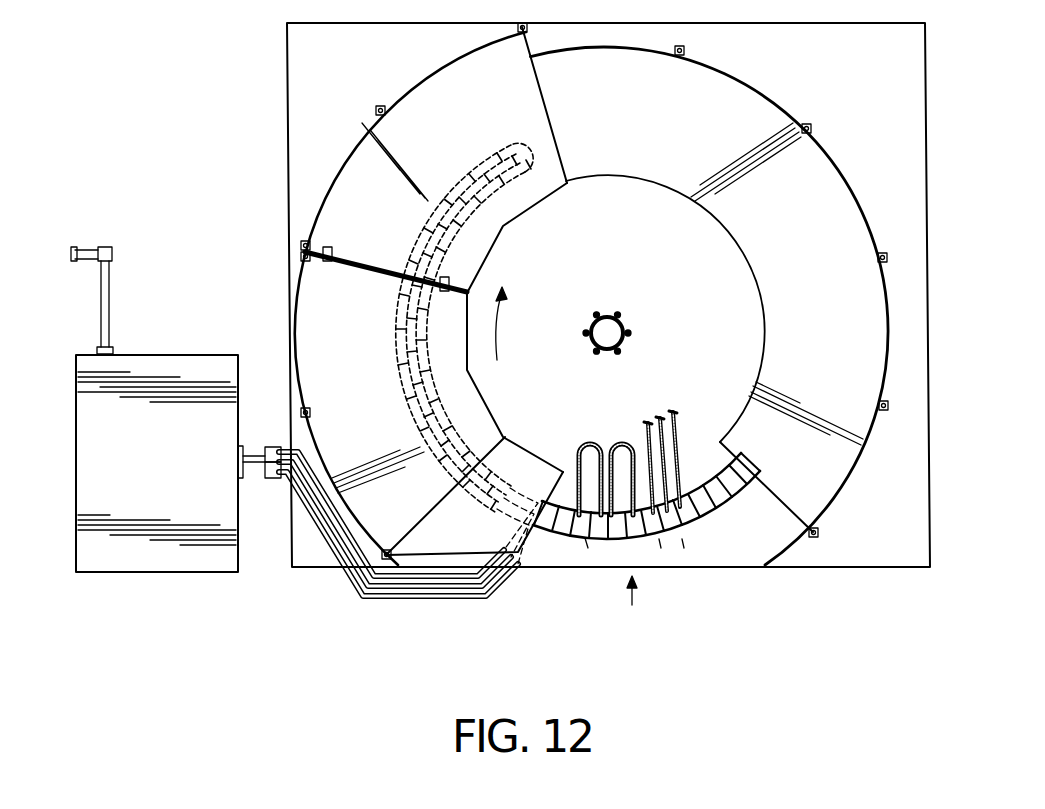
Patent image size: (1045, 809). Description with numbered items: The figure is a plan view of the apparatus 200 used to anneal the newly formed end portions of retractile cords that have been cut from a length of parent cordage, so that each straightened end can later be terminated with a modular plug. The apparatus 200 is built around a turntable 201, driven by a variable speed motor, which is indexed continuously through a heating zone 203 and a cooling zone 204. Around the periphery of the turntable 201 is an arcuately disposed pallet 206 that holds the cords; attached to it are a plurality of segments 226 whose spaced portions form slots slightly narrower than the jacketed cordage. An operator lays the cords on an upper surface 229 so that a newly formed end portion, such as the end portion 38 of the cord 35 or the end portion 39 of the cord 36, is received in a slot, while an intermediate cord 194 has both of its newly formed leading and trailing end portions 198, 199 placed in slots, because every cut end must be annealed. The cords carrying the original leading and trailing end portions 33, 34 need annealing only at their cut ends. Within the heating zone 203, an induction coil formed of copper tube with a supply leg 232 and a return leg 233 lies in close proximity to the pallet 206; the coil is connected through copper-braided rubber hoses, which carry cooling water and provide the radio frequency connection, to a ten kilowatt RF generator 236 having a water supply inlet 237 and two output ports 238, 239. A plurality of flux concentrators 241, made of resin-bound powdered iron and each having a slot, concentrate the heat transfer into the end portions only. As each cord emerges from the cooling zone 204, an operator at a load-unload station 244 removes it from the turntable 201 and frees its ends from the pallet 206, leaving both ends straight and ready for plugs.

The apparatus 200 is at (320, 642).
The turntable 201 is at (732, 388).
The heating zone 203 is at (463, 396).
The cooling zone 204 is at (762, 256).
The pallet 206 is at (546, 532).
The segments 226 is at (722, 498).
The upper surface 229 is at (703, 474).
The supply leg 232 is at (403, 367).
The return leg 233 is at (477, 209).
The RF generator 236 is at (170, 372).
The water supply inlet 237 is at (116, 350).
The output port 238 is at (243, 458).
The output port 239 is at (240, 458).
The flux concentrators 241 is at (430, 229).
The load-unload station 244 is at (654, 601).
The retractile cord 194 is at (591, 443).
The newly formed leading end portion 198 is at (587, 540).
The newly formed trailing end portion 199 is at (600, 543).
The original leading end portion 33 is at (648, 422).
The original trailing end portion 34 is at (661, 417).
The retractile cord 35 is at (648, 440).
The retractile cord 36 is at (679, 428).
The newly formed end portion 38 is at (660, 537).
The newly formed end portion 39 is at (683, 538).